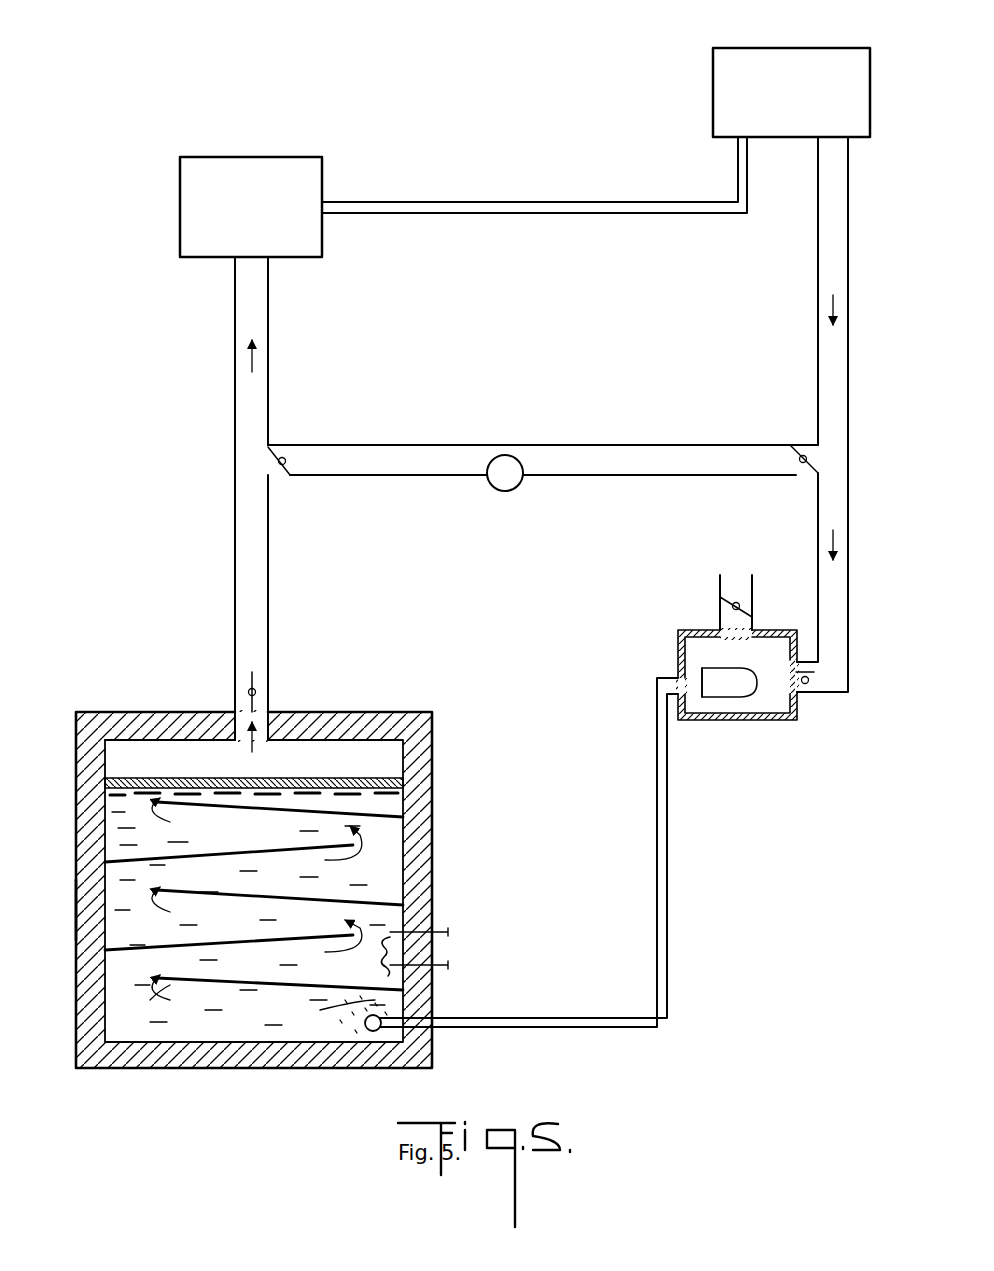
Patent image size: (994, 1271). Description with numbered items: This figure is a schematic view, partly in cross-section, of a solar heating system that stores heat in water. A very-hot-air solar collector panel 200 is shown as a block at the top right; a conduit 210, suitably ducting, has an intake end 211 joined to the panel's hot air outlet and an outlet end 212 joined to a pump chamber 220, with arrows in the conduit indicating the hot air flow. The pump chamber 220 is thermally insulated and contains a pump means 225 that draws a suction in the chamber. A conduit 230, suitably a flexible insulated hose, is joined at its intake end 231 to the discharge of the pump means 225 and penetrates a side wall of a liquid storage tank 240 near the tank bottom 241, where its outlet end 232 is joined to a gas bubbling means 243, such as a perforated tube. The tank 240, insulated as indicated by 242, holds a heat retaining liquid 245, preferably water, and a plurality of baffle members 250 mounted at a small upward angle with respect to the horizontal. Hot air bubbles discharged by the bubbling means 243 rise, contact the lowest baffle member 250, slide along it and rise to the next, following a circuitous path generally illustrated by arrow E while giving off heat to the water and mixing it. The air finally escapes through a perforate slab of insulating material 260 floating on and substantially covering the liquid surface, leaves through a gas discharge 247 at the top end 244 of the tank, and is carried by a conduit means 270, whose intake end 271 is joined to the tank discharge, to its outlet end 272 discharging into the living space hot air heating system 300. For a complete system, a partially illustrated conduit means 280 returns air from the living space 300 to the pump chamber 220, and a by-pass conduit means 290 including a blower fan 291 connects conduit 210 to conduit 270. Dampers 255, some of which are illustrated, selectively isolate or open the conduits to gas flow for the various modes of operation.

The solar collector panel 200 is at (735, 48).
The intake end 211 is at (855, 140).
The living space hot air heating system 300 is at (197, 157).
The outlet end 272 is at (232, 259).
The conduit means 270 is at (235, 572).
The by-pass conduit means 290 is at (423, 445).
The blower fan 291 is at (505, 491).
The dampers 255 is at (298, 447).
The conduit 210 is at (850, 465).
The outlet end 212 is at (808, 692).
The pump chamber 220 is at (680, 630).
The conduit means 280 is at (720, 584).
The pump means 225 is at (745, 692).
The intake end 231 is at (695, 700).
The conduit 230 is at (667, 852).
The liquid storage tank 240 is at (432, 770).
The thermal insulation 242 is at (80, 912).
The tank bottom 241 is at (243, 1042).
The top end 244 is at (145, 740).
The intake end 271 is at (272, 710).
The perforate slab of insulating material 260 is at (400, 778).
The heat retaining liquid 245 is at (115, 820).
The baffle members 250 is at (375, 838).
The gas discharge 247 is at (432, 982).
The outlet end 232 is at (380, 1030).
The gas bubbling means 243 is at (370, 1042).
The arrow E is at (150, 998).